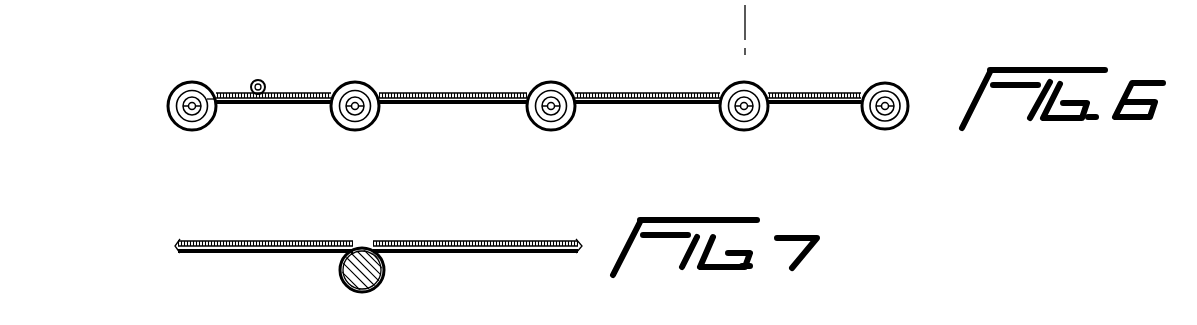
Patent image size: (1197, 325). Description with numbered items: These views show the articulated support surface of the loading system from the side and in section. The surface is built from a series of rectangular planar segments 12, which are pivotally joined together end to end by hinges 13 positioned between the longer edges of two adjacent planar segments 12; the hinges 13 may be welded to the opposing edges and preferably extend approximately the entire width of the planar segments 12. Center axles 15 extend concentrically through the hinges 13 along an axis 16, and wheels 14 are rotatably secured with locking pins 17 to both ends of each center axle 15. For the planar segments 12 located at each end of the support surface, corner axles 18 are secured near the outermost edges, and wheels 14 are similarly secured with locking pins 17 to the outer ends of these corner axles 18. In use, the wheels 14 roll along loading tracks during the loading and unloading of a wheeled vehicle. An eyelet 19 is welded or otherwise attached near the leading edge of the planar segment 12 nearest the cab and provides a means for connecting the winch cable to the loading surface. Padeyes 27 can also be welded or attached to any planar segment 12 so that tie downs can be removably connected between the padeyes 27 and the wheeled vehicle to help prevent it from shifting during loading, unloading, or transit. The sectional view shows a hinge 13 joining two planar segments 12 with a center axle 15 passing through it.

In FIG. 6, the planar segment 12 is at (478, 95).
In FIG. 7, the planar segment 12 is at (268, 241).
In FIG. 7, the hinge 13 is at (345, 260).
In FIG. 6, the wheel 14 is at (203, 130).
In FIG. 6, the center axle 15 is at (357, 98).
In FIG. 7, the center axle 15 is at (385, 278).
In FIG. 6, the axis 16 is at (746, 14).
In FIG. 6, the locking pin 17 is at (183, 115).
In FIG. 6, the corner axle 18 is at (191, 97).
In FIG. 6, the eyelet 19 is at (216, 95).
In FIG. 6, the padeye 27 is at (267, 86).